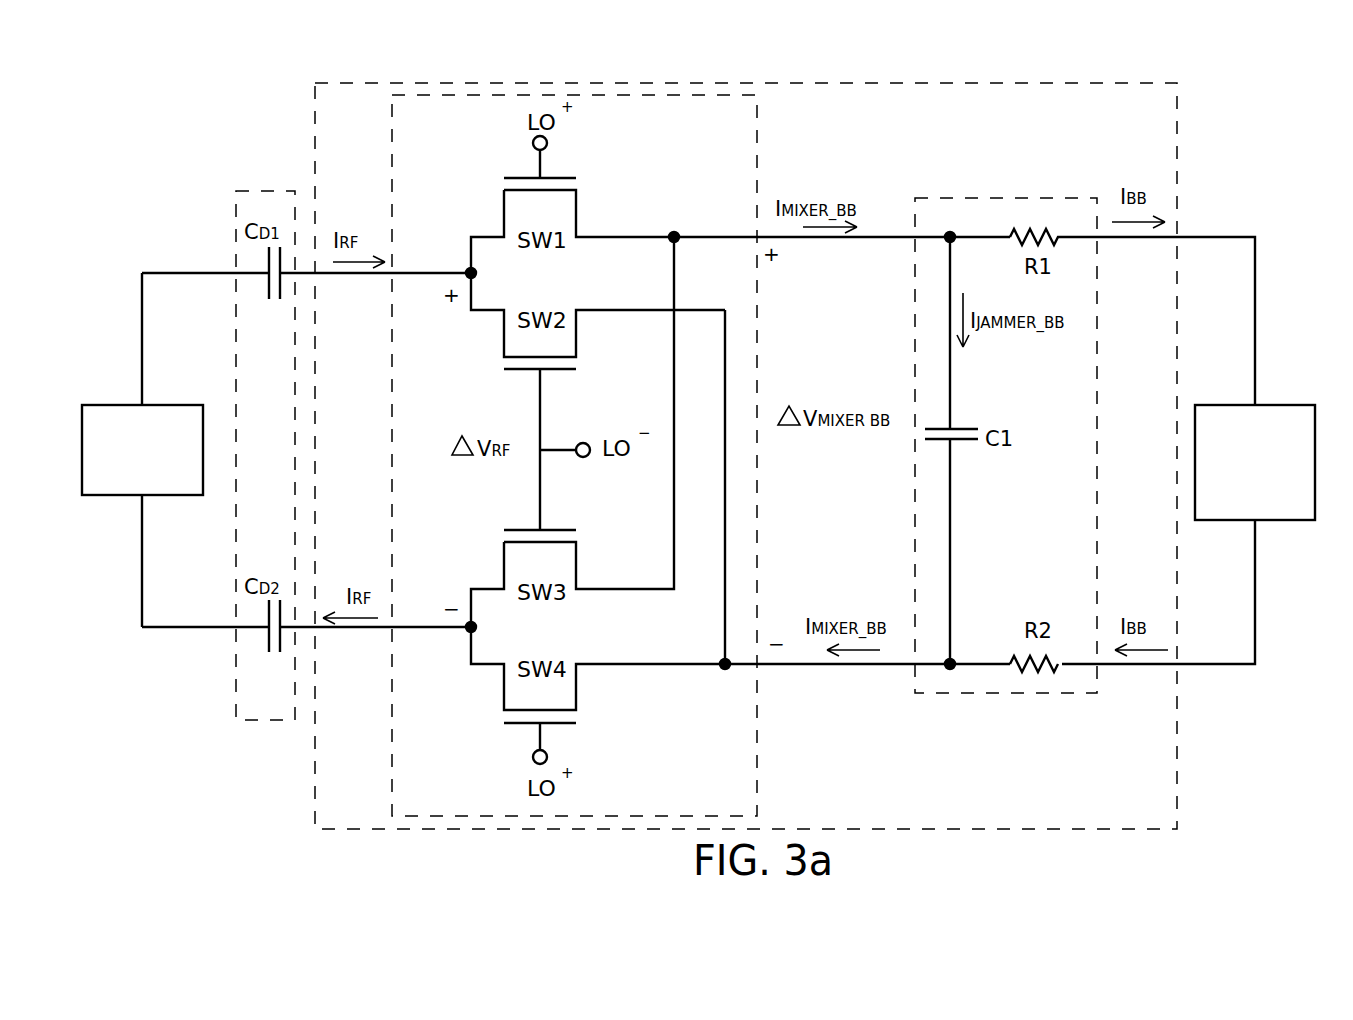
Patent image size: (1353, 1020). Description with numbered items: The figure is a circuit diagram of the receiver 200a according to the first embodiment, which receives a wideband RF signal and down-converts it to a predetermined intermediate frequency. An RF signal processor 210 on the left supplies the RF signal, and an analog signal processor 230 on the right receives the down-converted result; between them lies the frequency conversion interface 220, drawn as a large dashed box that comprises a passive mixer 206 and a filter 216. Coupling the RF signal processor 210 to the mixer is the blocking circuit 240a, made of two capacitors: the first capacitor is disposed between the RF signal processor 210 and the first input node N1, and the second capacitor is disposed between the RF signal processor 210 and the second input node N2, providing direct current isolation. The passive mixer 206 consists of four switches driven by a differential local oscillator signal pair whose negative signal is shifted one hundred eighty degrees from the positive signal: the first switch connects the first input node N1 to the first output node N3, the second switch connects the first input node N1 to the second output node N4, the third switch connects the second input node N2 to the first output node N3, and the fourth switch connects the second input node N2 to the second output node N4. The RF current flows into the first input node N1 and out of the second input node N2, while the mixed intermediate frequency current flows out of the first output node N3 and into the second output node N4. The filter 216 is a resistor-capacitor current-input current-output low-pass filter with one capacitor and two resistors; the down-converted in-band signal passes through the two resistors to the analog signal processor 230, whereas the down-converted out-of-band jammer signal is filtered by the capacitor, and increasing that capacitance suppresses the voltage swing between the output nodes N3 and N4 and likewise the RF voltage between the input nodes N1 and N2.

The receiver 200a is at (1210, 142).
The passive mixer 206 is at (757, 140).
The RF signal processor 210 is at (167, 405).
The filter 216 is at (1045, 198).
The frequency conversion interface 220 is at (1135, 83).
The analog signal processor 230 is at (1283, 405).
The blocking circuit 240a is at (245, 191).
The first input node N1 is at (469, 271).
The second input node N2 is at (468, 630).
The first output node N3 is at (677, 233).
The second output node N4 is at (723, 670).